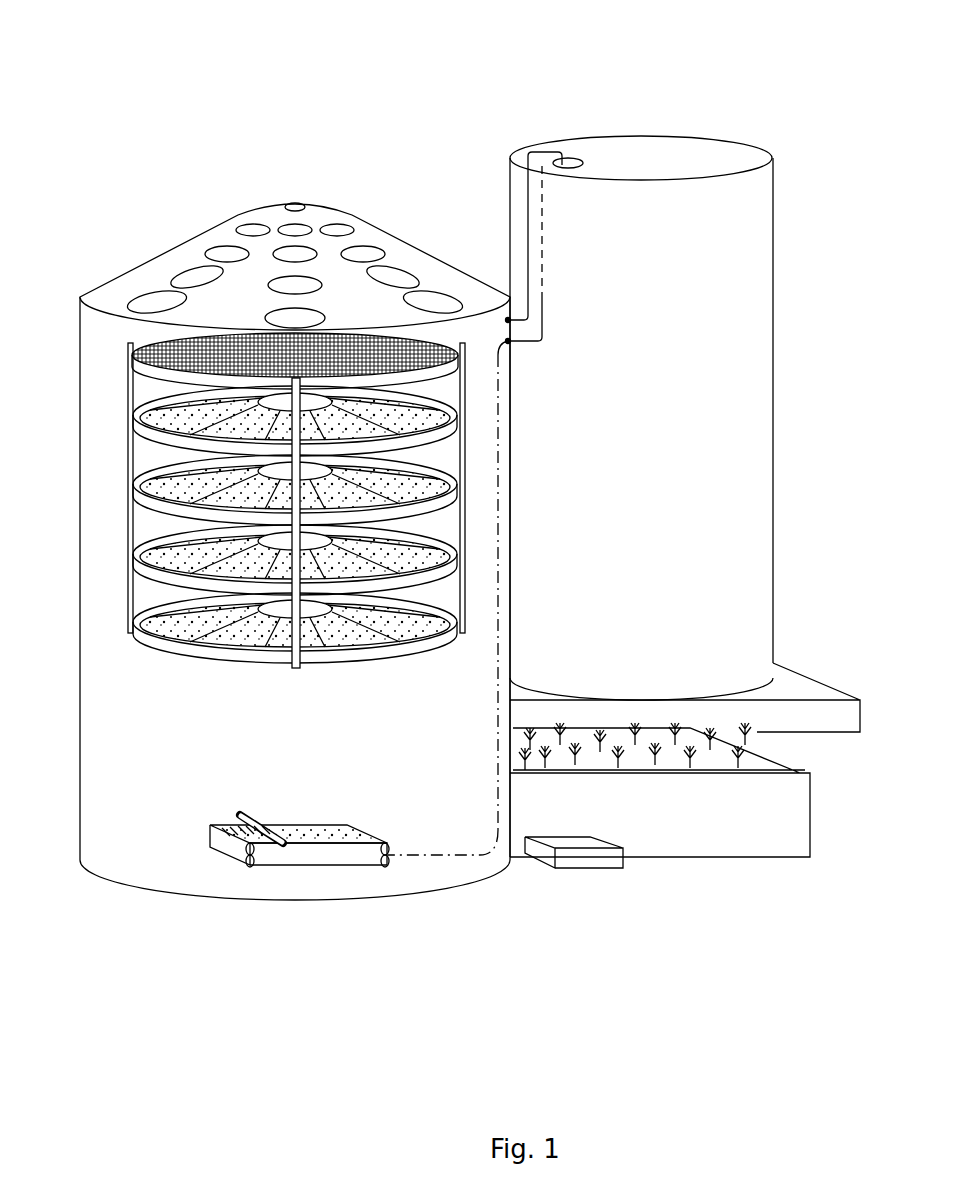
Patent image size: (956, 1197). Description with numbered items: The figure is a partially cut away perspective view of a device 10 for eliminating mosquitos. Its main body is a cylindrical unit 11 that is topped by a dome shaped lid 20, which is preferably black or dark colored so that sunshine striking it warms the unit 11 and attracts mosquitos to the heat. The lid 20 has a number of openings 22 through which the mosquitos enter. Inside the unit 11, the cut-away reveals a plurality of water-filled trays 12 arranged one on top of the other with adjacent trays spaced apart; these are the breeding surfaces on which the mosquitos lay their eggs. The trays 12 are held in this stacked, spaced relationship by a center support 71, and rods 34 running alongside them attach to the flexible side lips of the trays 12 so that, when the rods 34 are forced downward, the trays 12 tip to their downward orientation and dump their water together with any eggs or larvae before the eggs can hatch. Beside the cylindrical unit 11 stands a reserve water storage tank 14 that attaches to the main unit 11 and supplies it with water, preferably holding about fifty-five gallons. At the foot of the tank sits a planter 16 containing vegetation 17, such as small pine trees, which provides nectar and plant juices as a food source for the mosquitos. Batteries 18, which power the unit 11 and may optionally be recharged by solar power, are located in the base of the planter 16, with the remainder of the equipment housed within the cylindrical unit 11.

The device 10 is at (222, 130).
The unit 11 is at (80, 686).
The trays 12 is at (160, 412).
The reserve water storage tank 14 is at (773, 318).
The planter 16 is at (790, 773).
The vegetation 17 is at (740, 757).
The batteries 18 is at (590, 862).
The dome shaped lid 20 is at (343, 210).
The openings 22 is at (292, 205).
The rods 34 is at (128, 618).
The center support 71 is at (315, 625).